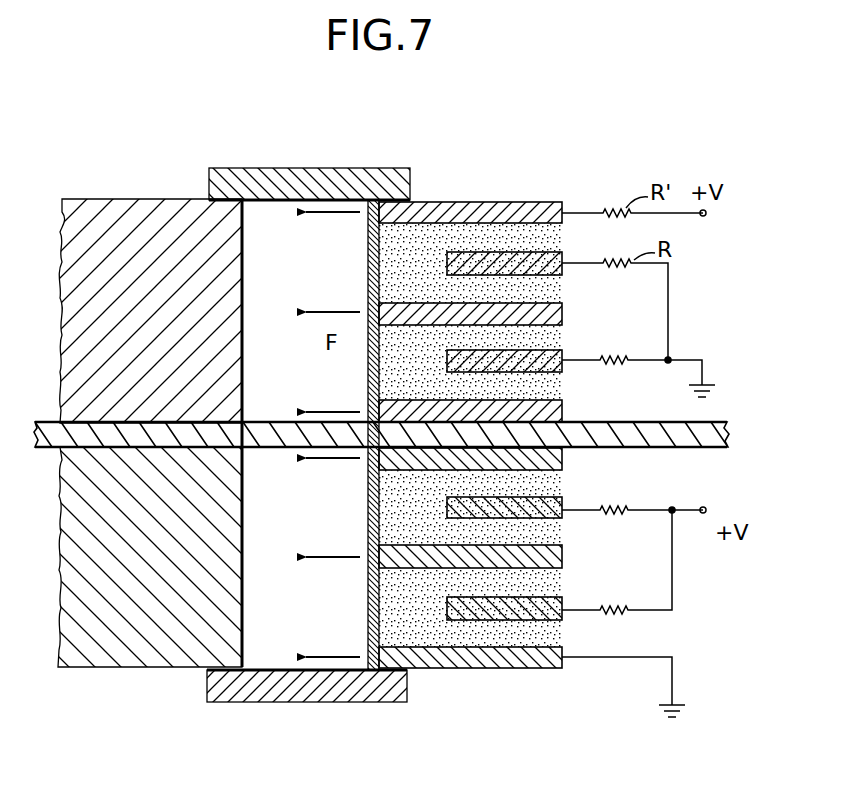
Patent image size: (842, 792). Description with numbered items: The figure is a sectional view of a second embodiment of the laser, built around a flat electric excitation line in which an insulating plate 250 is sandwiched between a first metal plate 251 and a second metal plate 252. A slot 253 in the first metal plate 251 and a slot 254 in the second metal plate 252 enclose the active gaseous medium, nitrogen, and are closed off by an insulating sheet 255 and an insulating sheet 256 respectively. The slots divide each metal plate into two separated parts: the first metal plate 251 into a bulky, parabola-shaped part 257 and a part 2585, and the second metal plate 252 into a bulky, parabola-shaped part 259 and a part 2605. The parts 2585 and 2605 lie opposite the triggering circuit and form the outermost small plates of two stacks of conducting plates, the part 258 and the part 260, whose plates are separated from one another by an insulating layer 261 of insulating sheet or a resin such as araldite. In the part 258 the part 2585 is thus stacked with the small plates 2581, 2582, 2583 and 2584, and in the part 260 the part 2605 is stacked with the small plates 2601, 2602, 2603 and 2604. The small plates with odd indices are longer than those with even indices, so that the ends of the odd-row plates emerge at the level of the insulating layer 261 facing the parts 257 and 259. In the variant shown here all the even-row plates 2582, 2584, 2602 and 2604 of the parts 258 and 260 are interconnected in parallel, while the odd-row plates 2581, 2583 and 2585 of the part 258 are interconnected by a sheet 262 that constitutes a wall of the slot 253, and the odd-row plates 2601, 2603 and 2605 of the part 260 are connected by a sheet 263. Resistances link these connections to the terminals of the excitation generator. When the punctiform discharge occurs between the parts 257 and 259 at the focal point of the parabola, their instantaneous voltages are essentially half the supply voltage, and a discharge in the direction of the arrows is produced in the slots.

The insulating plate 250 is at (707, 448).
The first metal plate 251 is at (420, 196).
The second metal plate 252 is at (202, 676).
The slot 253 is at (283, 224).
The slot 254 is at (337, 660).
The insulating sheet 255 is at (270, 186).
The insulating sheet 256 is at (270, 686).
The part of the first metal plate 257 is at (100, 228).
The part 258 is at (511, 285).
The small plate 2581 is at (562, 412).
The small plate 2582 is at (562, 360).
The small plate 2583 is at (562, 313).
The small plate 2584 is at (562, 263).
The part of the first metal plate 2585 is at (562, 213).
The part of the second metal plate 259 is at (93, 633).
The part 260 is at (511, 585).
The small plate 2601 is at (562, 458).
The small plate 2602 is at (562, 515).
The small plate 2603 is at (562, 557).
The small plate 2604 is at (562, 615).
The part of the second metal plate 2605 is at (562, 665).
The insulating layer 261 is at (404, 263).
The sheet 262 is at (368, 251).
The sheet 263 is at (368, 590).